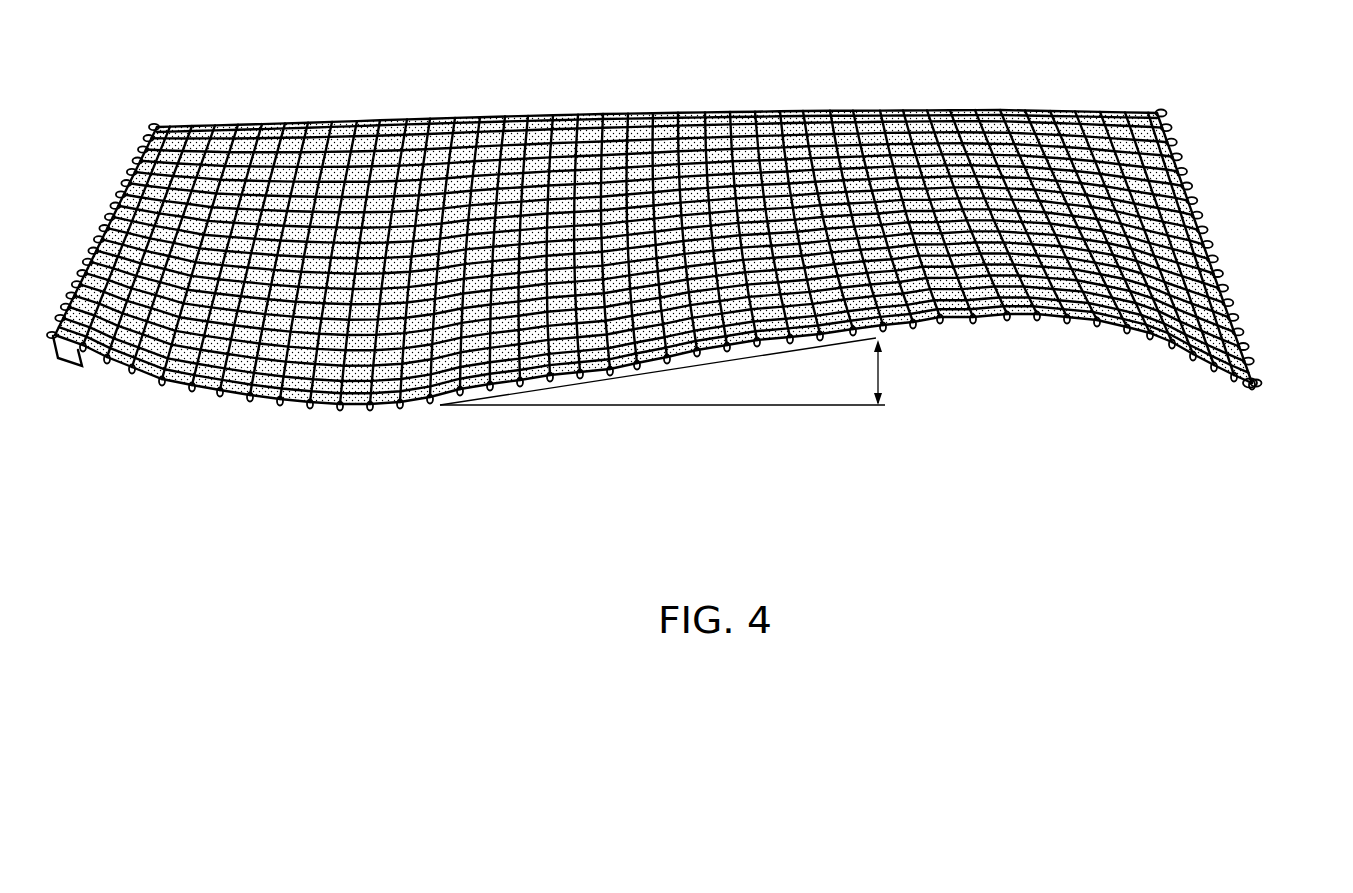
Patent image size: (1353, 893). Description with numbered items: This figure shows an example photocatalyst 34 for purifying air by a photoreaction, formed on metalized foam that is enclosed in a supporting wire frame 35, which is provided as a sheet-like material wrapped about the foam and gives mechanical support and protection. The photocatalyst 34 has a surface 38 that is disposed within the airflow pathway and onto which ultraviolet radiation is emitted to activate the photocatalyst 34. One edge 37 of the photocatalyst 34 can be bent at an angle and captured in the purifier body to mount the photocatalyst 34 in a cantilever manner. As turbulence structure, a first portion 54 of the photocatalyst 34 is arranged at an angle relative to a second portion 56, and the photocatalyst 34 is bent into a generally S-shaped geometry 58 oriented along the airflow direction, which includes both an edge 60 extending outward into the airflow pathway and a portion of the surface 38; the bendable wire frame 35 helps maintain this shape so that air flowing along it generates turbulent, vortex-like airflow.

The photocatalyst 34 is at (344, 133).
The wire frame 35 is at (657, 74).
The edge of the photocatalyst 37 is at (1209, 206).
The surface 38 is at (658, 235).
The first portion 54 is at (267, 421).
The second portion 56 is at (856, 370).
The S-shaped geometry 58 is at (662, 474).
The edge 60 is at (1274, 418).